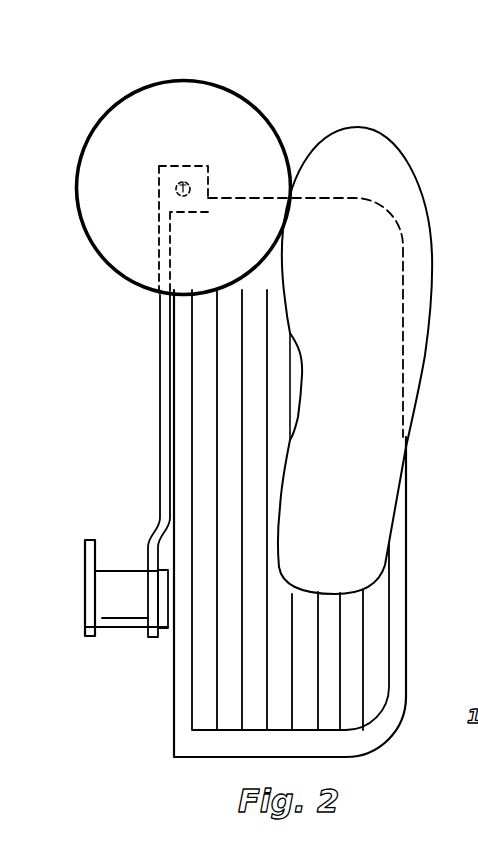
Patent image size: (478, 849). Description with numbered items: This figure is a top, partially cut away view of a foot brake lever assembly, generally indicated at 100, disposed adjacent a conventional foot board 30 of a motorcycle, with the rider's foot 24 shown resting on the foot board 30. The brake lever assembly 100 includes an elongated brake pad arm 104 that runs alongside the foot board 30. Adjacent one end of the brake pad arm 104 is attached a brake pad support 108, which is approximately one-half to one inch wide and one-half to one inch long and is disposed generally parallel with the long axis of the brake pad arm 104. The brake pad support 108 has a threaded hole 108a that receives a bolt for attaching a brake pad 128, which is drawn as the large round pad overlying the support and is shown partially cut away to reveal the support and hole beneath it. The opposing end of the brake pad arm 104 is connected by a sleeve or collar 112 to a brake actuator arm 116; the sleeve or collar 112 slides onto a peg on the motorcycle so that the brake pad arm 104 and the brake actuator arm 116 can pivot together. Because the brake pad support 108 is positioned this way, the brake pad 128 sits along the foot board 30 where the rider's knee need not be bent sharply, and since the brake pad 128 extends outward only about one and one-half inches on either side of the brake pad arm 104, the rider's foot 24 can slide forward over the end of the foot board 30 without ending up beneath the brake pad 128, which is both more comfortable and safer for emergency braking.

The rider's foot 24 is at (364, 416).
The foot board 30 is at (398, 572).
The brake lever assembly 100 is at (107, 421).
The brake pad arm 104 is at (160, 352).
The brake pad support 108 is at (198, 178).
The threaded hole 108a is at (183, 182).
The sleeve or collar 112 is at (118, 571).
The brake actuator arm 116 is at (90, 540).
The brake pad 128 is at (160, 82).